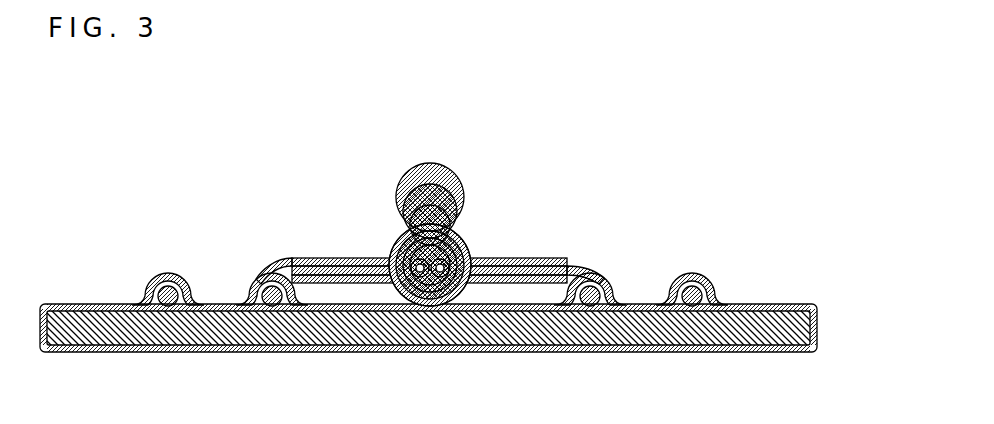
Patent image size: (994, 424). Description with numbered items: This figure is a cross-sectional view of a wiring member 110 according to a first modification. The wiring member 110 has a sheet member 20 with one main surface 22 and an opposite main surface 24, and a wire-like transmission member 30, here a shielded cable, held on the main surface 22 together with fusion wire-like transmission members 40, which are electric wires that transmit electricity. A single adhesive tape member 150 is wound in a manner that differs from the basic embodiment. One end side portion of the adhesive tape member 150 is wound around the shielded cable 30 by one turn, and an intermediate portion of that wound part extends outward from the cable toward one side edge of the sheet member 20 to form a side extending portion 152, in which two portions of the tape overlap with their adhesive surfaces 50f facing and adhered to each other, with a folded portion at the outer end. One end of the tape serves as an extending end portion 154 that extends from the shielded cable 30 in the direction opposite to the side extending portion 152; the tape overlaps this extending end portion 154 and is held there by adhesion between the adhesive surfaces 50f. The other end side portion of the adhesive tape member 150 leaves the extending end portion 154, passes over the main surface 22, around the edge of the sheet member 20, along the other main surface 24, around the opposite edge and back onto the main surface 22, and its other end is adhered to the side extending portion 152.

The sheet member 20 is at (780, 352).
The main surface 22 is at (757, 304).
The main surface 24 is at (731, 352).
The wire-like transmission member 30 is at (432, 223).
The fusion wire-like transmission member 40 is at (163, 272).
The adhesive surface 50f is at (337, 258).
The wiring member 110 is at (822, 253).
The adhesive tape member 150 is at (574, 267).
The side extending portion 152 is at (309, 283).
The extending end portion 154 is at (525, 283).